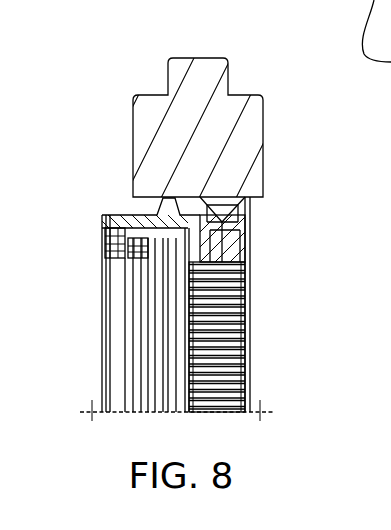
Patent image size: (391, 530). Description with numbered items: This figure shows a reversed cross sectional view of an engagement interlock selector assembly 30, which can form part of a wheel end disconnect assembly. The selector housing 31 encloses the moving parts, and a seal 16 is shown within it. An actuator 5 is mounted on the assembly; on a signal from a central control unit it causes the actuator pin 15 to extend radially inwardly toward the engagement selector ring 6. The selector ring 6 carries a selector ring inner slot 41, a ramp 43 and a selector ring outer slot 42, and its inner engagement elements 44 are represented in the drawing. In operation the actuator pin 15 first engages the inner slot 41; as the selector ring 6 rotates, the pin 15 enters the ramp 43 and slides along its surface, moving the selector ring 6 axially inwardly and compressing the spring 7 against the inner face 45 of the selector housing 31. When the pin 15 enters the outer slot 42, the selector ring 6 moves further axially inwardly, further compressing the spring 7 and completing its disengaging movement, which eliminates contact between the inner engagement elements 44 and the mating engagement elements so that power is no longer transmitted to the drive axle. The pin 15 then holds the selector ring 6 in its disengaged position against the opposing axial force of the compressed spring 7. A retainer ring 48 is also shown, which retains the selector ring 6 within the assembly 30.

The engagement interlock selector assembly 30 is at (68, 106).
The actuator 5 is at (153, 116).
The selector housing 31 is at (108, 214).
The seal 16 is at (98, 248).
The inner face of selector housing 45 is at (143, 256).
The spring 7 is at (128, 395).
The actuator pin 15 is at (236, 186).
The engagement selector ring ramp 43 is at (233, 206).
The selector ring outer slot 42 is at (247, 216).
The retainer ring 48 is at (249, 234).
The engagement selector ring 6 is at (243, 256).
The selector ring inner slot 41 is at (225, 291).
The engagement selector ring inner engagement elements 44 is at (226, 358).